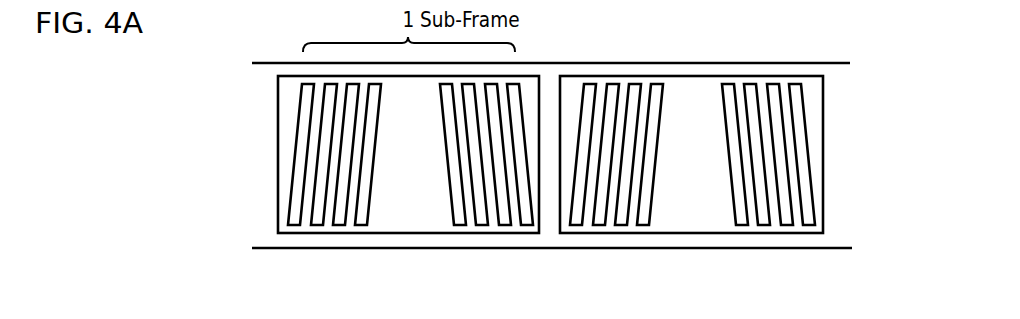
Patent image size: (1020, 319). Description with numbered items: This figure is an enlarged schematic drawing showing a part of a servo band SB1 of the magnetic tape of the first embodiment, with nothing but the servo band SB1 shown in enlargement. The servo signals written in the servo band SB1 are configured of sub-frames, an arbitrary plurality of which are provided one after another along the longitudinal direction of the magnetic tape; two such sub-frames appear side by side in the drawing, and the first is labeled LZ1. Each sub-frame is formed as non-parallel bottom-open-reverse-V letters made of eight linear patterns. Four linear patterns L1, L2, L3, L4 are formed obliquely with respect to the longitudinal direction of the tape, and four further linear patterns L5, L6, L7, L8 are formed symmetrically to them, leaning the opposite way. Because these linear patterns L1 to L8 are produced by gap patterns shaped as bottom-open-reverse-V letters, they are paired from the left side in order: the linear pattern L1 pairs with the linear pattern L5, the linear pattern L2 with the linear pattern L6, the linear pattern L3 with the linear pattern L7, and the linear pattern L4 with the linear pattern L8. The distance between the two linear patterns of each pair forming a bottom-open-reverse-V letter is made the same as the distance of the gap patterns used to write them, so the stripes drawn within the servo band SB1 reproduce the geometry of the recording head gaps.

The servo band SB1 is at (828, 70).
The lens zone (first sub-frame) LZ1 is at (293, 90).
The linear pattern L1 is at (292, 219).
The linear pattern L2 is at (323, 219).
The linear pattern L3 is at (345, 219).
The linear pattern L4 is at (368, 219).
The linear pattern L5 is at (457, 219).
The linear pattern L6 is at (482, 219).
The linear pattern L7 is at (504, 219).
The linear pattern L8 is at (528, 219).